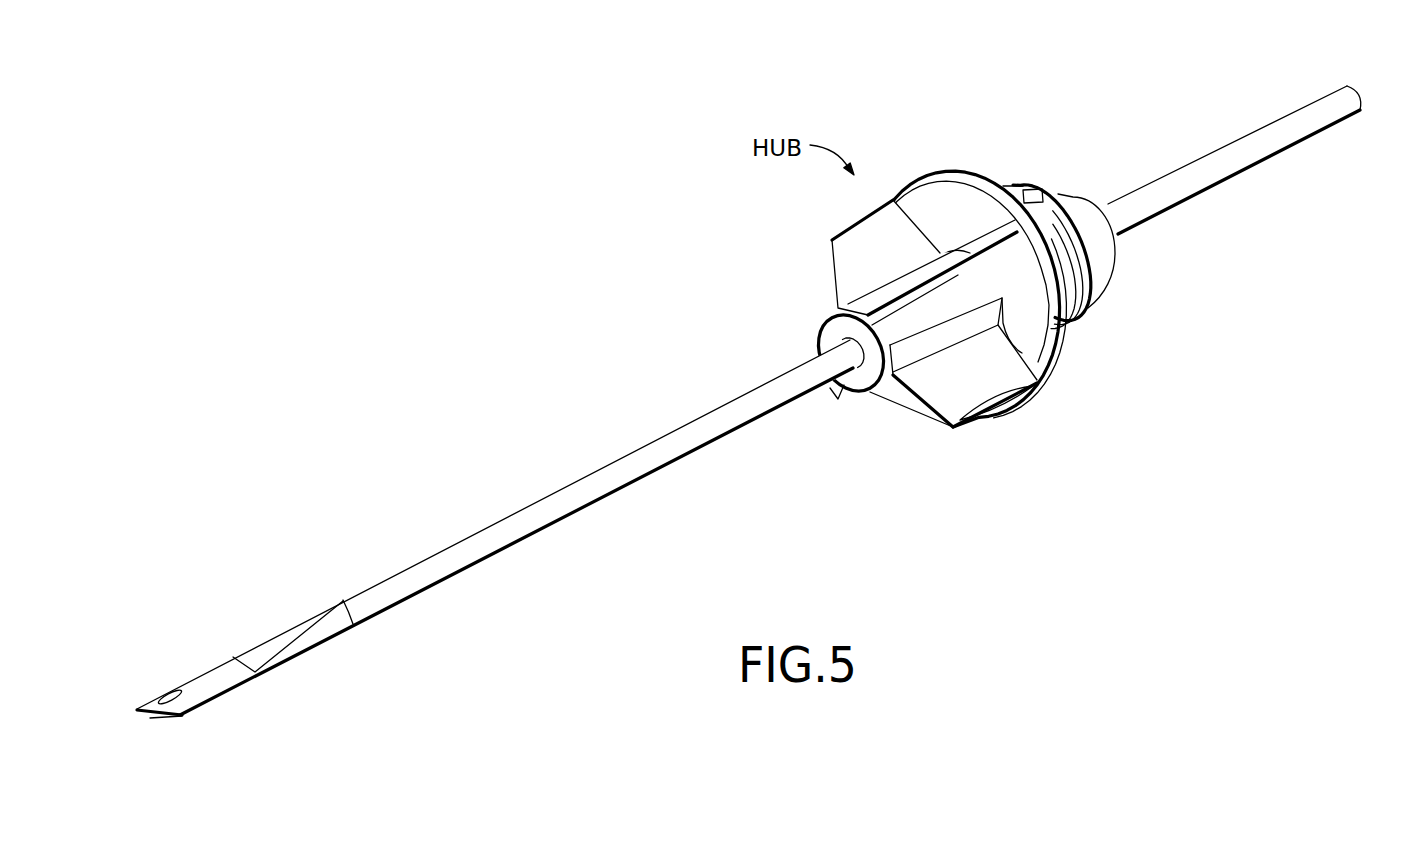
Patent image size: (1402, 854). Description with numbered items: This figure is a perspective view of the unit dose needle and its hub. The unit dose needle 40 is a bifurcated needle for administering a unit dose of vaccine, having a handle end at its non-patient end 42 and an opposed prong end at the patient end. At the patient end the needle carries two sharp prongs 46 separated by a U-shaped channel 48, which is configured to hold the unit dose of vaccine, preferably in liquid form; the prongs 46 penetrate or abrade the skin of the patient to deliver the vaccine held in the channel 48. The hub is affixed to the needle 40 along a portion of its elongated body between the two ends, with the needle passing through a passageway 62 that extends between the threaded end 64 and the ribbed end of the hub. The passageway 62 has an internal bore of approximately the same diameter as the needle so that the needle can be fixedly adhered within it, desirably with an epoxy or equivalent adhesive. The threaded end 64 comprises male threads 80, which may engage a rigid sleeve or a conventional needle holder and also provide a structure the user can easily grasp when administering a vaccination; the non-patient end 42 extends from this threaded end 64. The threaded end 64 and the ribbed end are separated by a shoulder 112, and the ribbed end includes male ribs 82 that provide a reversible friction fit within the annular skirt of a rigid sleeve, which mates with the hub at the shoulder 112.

The unit dose needle 40 is at (565, 500).
The non-patient end 42 is at (1347, 103).
The sharp prongs 46 is at (137, 713).
The U-shaped channel 48 is at (188, 715).
The passageway 62 is at (850, 342).
The threaded end 64 is at (1013, 192).
The male threads 80 is at (1042, 200).
The male ribs 82 is at (823, 275).
The shoulder 112 is at (948, 178).